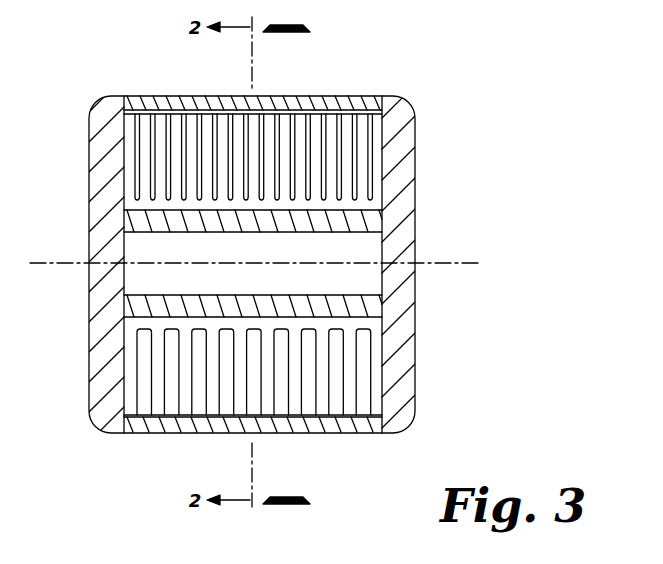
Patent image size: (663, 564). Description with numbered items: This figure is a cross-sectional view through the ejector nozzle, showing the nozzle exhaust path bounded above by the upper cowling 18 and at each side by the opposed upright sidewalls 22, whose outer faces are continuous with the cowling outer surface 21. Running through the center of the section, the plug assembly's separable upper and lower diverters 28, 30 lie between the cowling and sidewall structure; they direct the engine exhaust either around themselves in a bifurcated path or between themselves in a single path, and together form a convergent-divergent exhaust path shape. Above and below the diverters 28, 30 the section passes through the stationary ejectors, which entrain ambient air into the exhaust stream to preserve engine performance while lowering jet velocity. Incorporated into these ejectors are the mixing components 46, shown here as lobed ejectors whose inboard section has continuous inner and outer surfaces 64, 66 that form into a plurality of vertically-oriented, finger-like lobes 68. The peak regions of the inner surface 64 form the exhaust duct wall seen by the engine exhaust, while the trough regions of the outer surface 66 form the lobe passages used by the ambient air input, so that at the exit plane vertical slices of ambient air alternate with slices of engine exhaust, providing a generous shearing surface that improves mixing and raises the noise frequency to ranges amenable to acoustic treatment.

The upper cowling 18 is at (138, 97).
The cowling outer surface 21 is at (178, 97).
The upright sidewalls 22 is at (92, 180).
The upper diverter 28 is at (360, 255).
The lower diverter 30 is at (360, 272).
The mixing components 46 is at (309, 154).
The inner surface 64 is at (372, 178).
The outer surface 66 is at (362, 133).
The finger-like lobes 68 is at (198, 375).